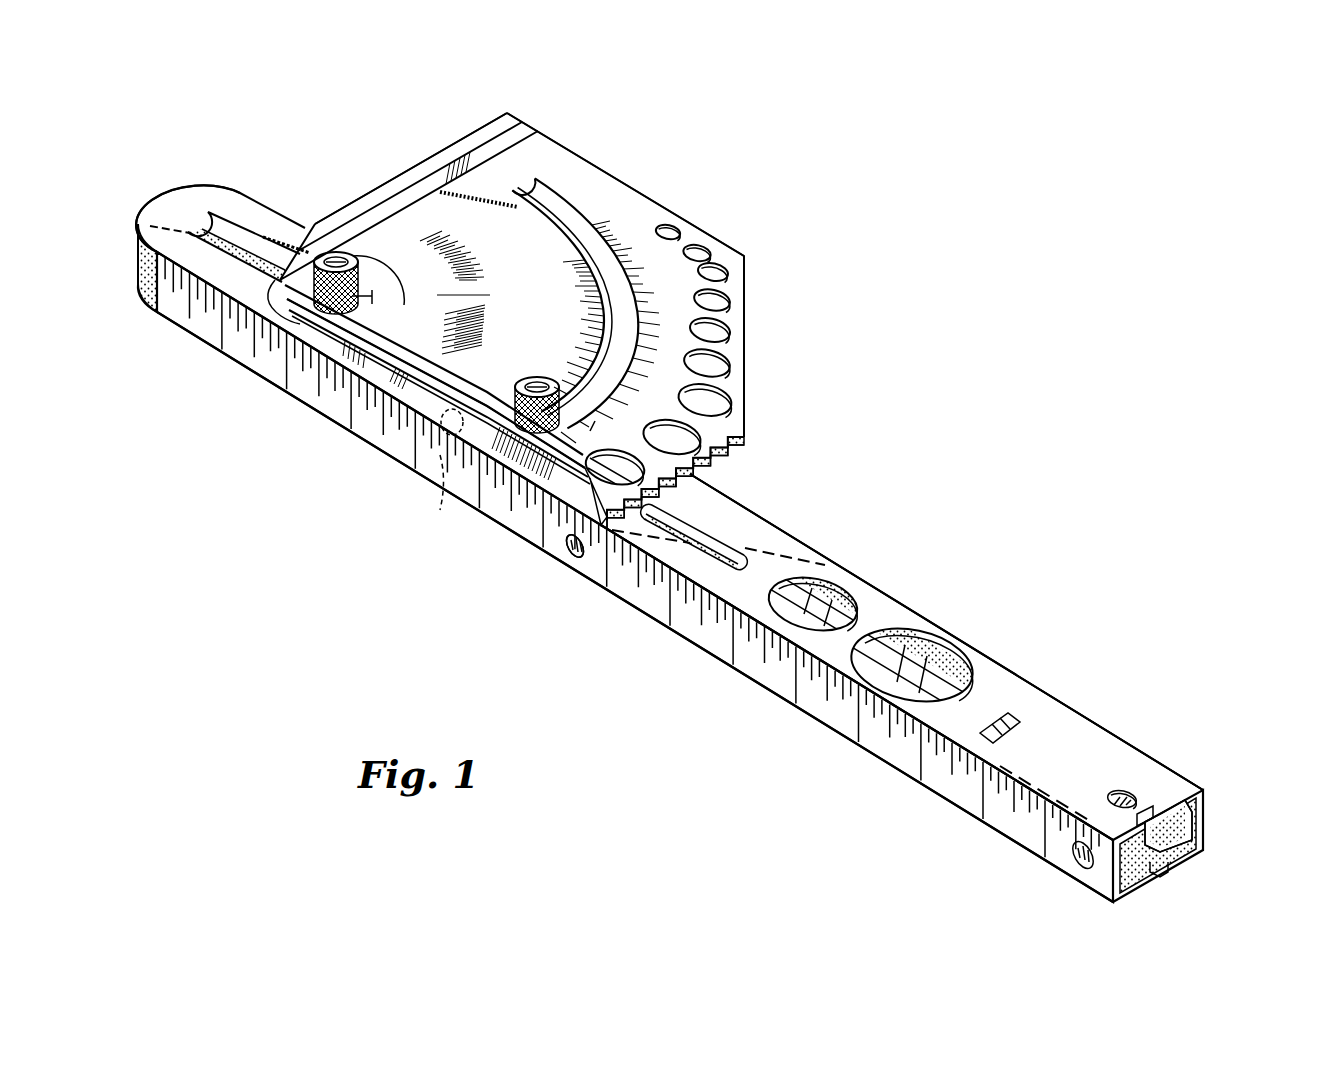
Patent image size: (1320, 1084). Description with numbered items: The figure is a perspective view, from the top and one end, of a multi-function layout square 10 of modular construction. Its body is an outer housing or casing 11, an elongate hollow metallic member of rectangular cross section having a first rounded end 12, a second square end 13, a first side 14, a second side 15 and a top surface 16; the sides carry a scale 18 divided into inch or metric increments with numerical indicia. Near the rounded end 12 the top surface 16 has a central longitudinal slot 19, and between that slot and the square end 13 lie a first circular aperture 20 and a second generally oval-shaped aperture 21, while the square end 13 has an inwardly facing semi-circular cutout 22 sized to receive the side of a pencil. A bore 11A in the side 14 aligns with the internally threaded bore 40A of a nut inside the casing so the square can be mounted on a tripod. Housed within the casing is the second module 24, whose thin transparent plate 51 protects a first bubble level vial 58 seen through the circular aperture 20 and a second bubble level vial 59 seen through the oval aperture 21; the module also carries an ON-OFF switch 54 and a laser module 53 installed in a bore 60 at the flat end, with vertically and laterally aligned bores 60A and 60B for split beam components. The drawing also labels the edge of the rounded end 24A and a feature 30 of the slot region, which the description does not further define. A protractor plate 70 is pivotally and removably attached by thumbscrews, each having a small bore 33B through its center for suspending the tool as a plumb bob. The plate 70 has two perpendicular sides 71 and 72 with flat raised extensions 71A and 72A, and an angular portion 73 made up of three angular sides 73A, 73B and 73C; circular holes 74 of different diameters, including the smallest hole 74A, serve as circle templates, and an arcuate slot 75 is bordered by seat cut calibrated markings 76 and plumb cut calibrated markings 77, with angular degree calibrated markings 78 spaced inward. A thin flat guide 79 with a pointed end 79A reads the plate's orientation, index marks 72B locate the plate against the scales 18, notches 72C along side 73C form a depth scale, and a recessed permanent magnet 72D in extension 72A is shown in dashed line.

The multi-function layout square 10 is at (870, 372).
The outer housing or casing 11 is at (768, 517).
The bore in the side wall 11A is at (578, 554).
The first rounded end 12 is at (170, 196).
The second square end 13 is at (1173, 800).
The first side 14 is at (770, 682).
The second side 15 is at (1007, 666).
The top surface 16 is at (1080, 730).
The scale 18 is at (902, 740).
The central longitudinal slot 19 is at (223, 213).
The first circular aperture 20 is at (808, 582).
The second generally oval-shaped aperture 21 is at (920, 627).
The semi-circular cutout 22 is at (1140, 817).
The second module 24 is at (160, 200).
The rounded end edge 24A is at (200, 186).
The slot bottom edge 30 is at (241, 244).
The small bore through thumbscrew 33B is at (348, 258).
The internally threaded bore 40A is at (575, 546).
The thin flat rectangular plate 51 is at (900, 637).
The laser module 53 is at (1168, 826).
The ON-OFF switch 54 is at (1010, 720).
The first bubble level vial 58 is at (843, 594).
The second bubble level vial 59 is at (920, 670).
The bore 60 is at (1185, 830).
The vertically aligned bore 60A is at (1117, 793).
The laterally aligned bore 60B is at (1073, 864).
The protractor plate 70 is at (626, 172).
The perpendicular side 71 is at (397, 172).
The flat raised extension 71A is at (411, 168).
The perpendicular side 72 is at (417, 404).
The flat raised extension 72A is at (436, 383).
The index marks 72B is at (303, 335).
The incrementally spaced notches 72C is at (707, 437).
The recessed small permanent magnet 72D is at (437, 513).
The rafter square plate 73 is at (625, 320).
The angular side 73A is at (557, 142).
The angular side 73B is at (746, 375).
The angular side 73C is at (724, 458).
The circular holes 74 is at (705, 270).
The smallest hole 74A is at (669, 228).
The arcuate slot 75 is at (598, 232).
The seat cut calibrated markings 76 is at (558, 268).
The plumb cut calibrated markings 77 is at (655, 262).
The angular degree calibrated markings 78 is at (490, 318).
The thin flat guide 79 is at (475, 366).
The pointed end 79A is at (593, 433).